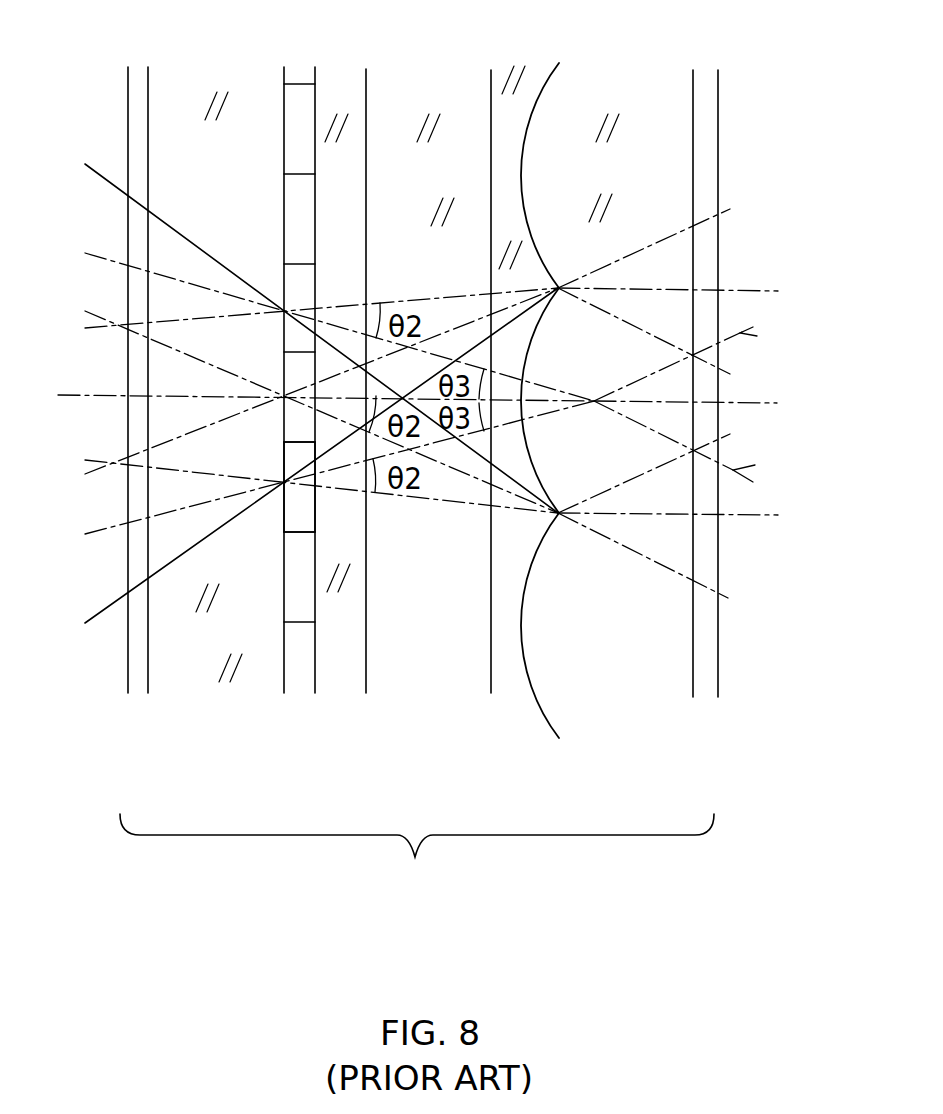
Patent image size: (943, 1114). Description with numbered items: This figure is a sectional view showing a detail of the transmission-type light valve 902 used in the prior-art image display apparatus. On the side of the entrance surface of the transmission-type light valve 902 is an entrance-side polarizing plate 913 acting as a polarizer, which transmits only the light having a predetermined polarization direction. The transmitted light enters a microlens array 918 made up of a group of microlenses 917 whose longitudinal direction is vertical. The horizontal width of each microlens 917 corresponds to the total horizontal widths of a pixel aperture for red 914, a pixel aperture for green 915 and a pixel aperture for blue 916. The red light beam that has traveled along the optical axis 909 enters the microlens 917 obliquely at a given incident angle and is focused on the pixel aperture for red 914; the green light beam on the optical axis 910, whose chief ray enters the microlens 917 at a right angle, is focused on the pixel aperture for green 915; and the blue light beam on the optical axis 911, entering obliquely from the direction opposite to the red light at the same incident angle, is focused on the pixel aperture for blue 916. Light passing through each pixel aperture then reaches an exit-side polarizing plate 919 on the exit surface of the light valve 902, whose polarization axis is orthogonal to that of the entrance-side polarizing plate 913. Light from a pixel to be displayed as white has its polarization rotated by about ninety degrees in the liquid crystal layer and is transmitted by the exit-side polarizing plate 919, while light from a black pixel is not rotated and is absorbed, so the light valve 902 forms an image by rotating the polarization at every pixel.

The transmission-type light valve 902 is at (417, 857).
The optical axis 909 is at (730, 463).
The optical axis 910 is at (757, 403).
The optical axis 911 is at (730, 338).
The entrance-side polarizing plate 913 is at (703, 130).
The pixel aperture for red 914 is at (298, 280).
The pixel aperture for green 915 is at (284, 396).
The pixel aperture for blue 916 is at (295, 512).
The microlens 917 is at (518, 620).
The microlens array 918 is at (595, 353).
The exit-side polarizing plate 919 is at (128, 110).